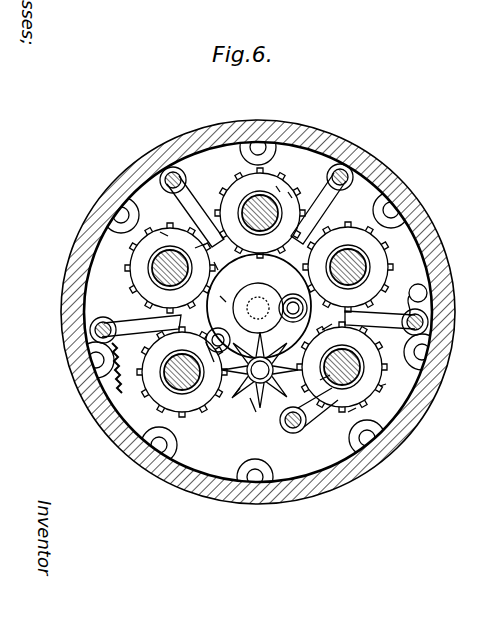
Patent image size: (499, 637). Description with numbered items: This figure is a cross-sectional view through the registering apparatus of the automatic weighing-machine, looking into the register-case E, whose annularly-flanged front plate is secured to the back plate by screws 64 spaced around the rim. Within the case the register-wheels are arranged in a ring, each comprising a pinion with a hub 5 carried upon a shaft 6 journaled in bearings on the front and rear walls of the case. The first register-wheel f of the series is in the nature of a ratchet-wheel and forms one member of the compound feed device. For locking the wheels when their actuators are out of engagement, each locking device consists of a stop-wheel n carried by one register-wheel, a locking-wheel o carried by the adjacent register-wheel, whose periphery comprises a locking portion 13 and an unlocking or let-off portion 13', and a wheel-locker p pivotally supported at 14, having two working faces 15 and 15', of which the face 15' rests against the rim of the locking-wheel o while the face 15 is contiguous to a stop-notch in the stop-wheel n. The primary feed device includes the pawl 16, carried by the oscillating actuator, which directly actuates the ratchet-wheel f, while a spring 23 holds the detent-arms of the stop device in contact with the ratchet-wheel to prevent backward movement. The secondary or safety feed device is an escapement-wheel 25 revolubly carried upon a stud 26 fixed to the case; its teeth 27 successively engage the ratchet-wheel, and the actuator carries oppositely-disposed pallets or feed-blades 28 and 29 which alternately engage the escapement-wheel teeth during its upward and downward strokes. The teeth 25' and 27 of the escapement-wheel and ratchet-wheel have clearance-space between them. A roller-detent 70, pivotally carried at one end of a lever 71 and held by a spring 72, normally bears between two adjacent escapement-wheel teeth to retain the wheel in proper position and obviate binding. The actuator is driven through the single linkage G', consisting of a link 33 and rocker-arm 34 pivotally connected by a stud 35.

The screws 64 is at (259, 150).
The register-case E is at (258, 312).
The single linkage G' is at (259, 306).
The rocker-arm 34 is at (258, 298).
The link 33 is at (259, 311).
The shaft 6 is at (262, 200).
The hub 5 is at (352, 360).
The pivotal support of wheel-locker 14 is at (176, 178).
The wheel-locker p is at (200, 212).
The spring 72 is at (138, 370).
The stud 26 is at (260, 370).
The stud 35 is at (293, 308).
The roller-detent 70 is at (222, 332).
The lever 71 is at (205, 352).
The pawl 16 is at (312, 420).
The spring 23 is at (428, 296).
The locking portion 13 is at (158, 223).
The unlocking or let-off portion 13' is at (181, 269).
The working face 15' is at (224, 260).
The working face 15 is at (204, 314).
The stop-wheel n is at (278, 186).
The locking-wheel o is at (290, 192).
The escapement-wheel 25 is at (229, 399).
The teeth of escapement-wheel 25' is at (260, 412).
The pallet or feed-blade 28 is at (328, 335).
The pallet or feed-blade 29 is at (317, 382).
The teeth 27 is at (352, 417).
The register-wheel f is at (387, 385).